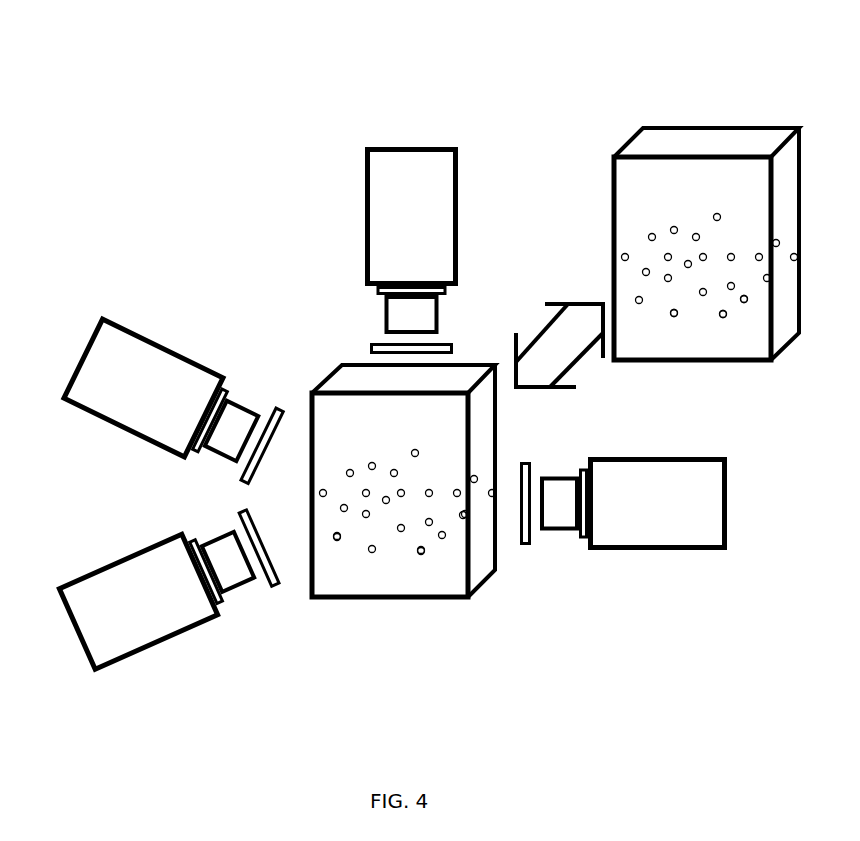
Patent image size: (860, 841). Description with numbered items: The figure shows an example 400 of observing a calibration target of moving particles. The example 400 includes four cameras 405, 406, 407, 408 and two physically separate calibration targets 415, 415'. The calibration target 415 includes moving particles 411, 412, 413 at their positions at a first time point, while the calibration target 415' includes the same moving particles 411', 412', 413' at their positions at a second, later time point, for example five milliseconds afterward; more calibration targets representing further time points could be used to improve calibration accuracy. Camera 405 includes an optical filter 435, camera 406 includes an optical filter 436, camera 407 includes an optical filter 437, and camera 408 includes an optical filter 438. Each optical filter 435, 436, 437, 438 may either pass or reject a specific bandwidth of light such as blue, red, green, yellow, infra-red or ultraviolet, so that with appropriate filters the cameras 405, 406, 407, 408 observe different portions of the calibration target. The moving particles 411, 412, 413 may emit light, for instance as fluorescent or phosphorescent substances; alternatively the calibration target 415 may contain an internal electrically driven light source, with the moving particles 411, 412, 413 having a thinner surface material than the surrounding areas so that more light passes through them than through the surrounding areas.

The example 400 is at (126, 96).
The camera 405 is at (363, 170).
The camera 406 is at (87, 350).
The camera 407 is at (90, 570).
The camera 408 is at (693, 548).
The optical filter 435 is at (368, 350).
The optical filter 436 is at (248, 480).
The optical filter 437 is at (275, 577).
The optical filter 438 is at (520, 545).
The moving particle 411 is at (322, 588).
The moving particle 412 is at (392, 593).
The moving particle 413 is at (437, 579).
The calibration target 415 is at (432, 526).
The moving particle 411' is at (695, 354).
The moving particle 412' is at (743, 361).
The moving particle 413' is at (775, 352).
The calibration target 415' is at (711, 234).